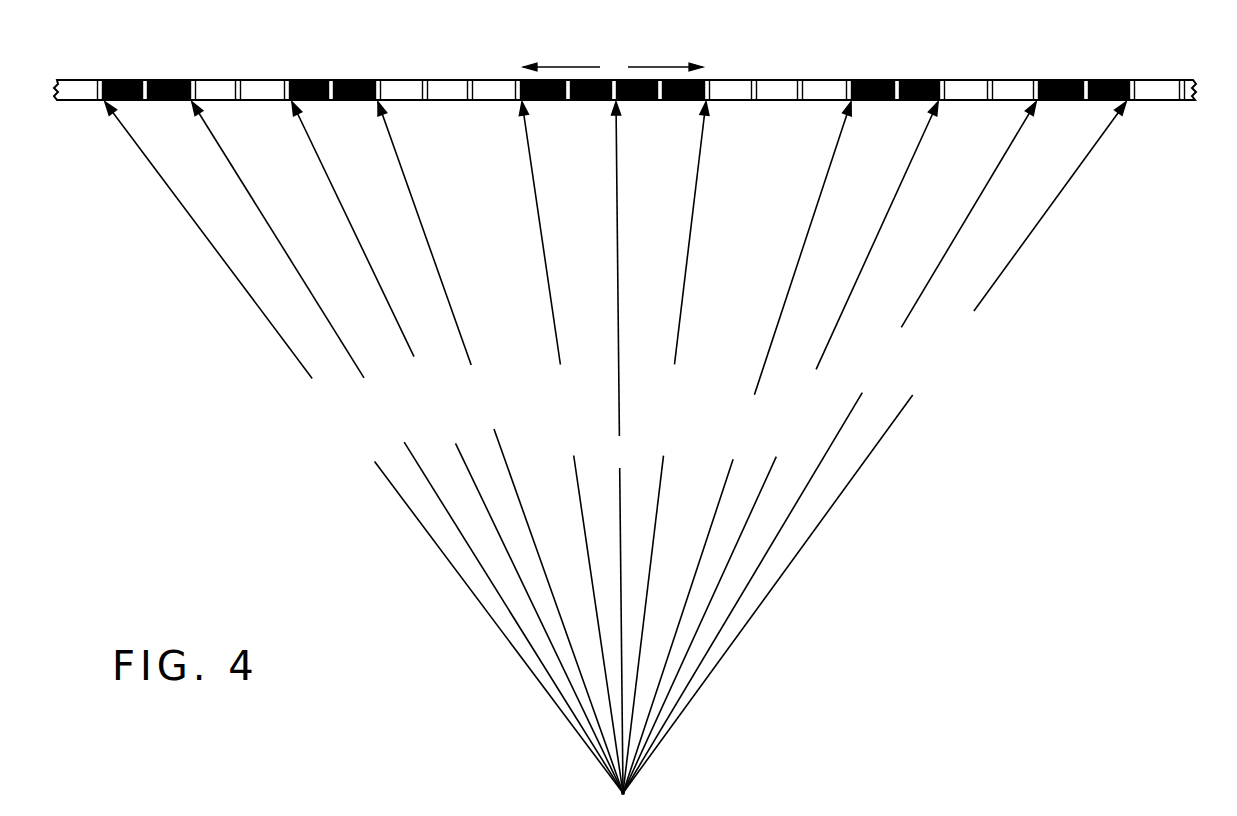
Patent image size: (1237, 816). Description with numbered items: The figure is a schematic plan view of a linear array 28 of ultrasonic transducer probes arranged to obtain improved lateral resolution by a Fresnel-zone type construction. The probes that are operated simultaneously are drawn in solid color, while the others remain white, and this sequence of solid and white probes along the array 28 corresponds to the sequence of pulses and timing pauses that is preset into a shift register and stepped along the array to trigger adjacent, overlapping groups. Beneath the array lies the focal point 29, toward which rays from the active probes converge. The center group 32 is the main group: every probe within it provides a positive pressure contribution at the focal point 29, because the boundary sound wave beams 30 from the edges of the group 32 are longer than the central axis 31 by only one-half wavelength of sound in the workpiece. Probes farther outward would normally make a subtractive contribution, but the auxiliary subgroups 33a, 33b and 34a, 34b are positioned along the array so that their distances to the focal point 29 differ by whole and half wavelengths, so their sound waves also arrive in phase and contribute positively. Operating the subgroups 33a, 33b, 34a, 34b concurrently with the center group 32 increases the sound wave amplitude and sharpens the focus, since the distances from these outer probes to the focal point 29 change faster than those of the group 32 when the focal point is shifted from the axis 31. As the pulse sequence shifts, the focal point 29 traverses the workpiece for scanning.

The linear array 28 is at (1153, 88).
The focal point 29 is at (630, 790).
The sound wave beams 30 is at (546, 265).
The central axis 31 is at (617, 236).
The center group 32 is at (523, 48).
The subgroup 33a is at (290, 69).
The subgroup 33b is at (852, 69).
The subgroup 34a is at (102, 69).
The subgroup 34b is at (1038, 69).